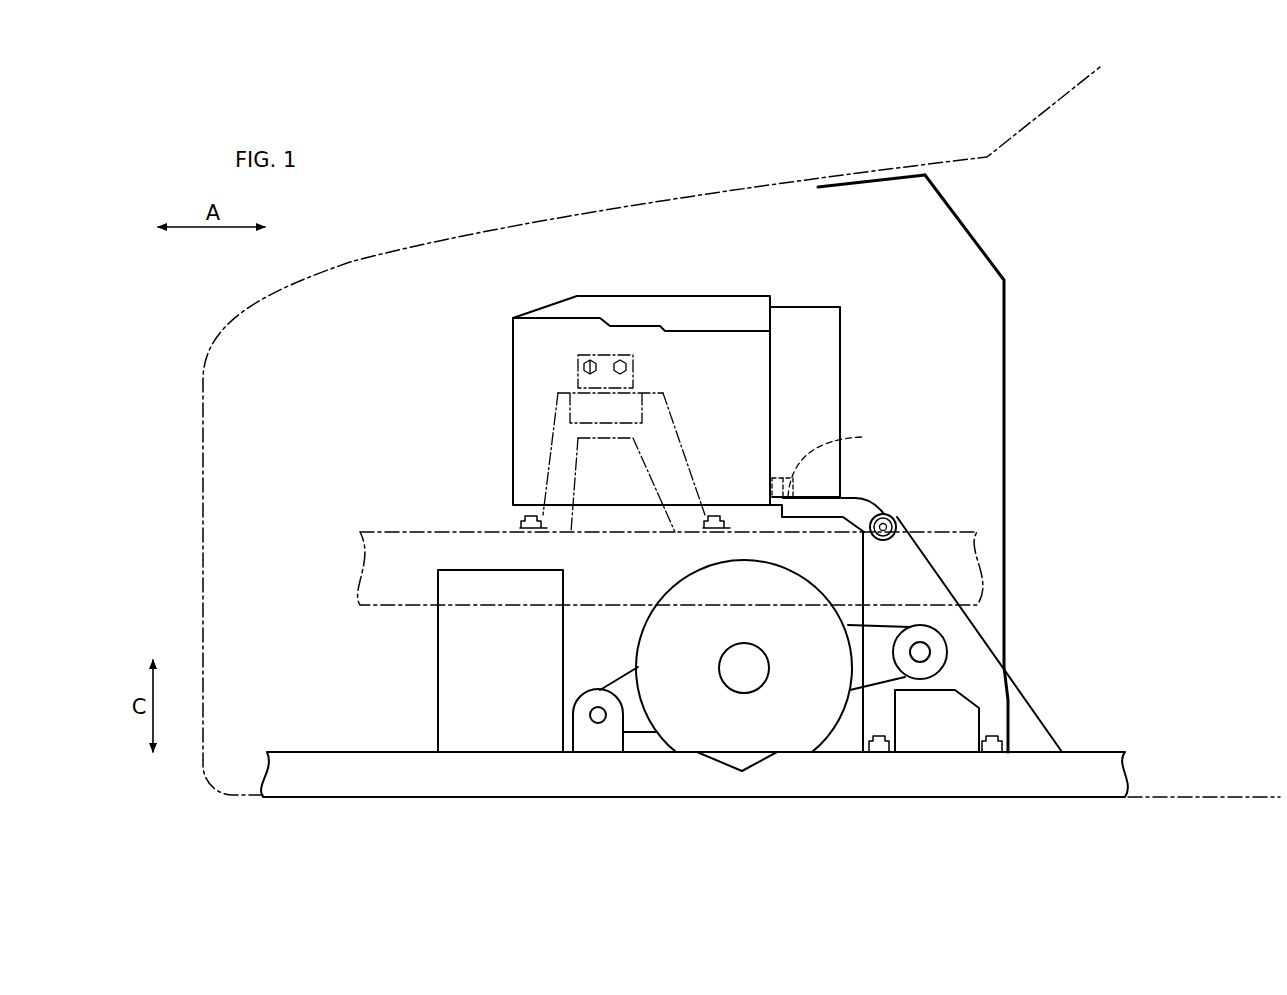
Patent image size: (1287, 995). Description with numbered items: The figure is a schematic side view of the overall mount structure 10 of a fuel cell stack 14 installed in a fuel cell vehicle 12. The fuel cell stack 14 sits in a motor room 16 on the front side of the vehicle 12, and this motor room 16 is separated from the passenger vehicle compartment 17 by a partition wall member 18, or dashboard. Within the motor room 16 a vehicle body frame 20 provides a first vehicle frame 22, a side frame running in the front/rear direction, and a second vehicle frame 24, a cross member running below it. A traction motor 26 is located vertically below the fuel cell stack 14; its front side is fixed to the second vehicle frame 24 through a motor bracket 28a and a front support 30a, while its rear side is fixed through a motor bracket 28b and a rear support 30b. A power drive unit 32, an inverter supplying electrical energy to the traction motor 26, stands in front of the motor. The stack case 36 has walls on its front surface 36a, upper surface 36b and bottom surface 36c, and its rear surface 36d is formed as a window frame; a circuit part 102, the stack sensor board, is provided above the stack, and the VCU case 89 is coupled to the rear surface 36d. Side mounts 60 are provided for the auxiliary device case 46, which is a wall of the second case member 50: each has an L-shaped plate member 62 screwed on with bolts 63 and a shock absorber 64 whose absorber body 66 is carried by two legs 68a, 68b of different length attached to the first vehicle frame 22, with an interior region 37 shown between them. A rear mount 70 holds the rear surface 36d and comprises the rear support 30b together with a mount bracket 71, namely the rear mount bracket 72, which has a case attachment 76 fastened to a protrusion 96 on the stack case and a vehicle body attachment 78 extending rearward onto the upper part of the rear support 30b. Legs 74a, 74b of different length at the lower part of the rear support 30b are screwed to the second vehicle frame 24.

The mount structure 10 is at (972, 461).
The fuel cell vehicle 12 is at (205, 314).
The fuel cell stack 14 is at (744, 492).
The motor room 16 is at (752, 214).
The vehicle compartment 17 is at (1050, 160).
The partition wall member 18 is at (1007, 316).
The vehicle body frame 20 is at (770, 638).
The first vehicle frame 22 is at (420, 532).
The second vehicle frame 24 is at (356, 752).
The traction motor 26 is at (783, 744).
The motor bracket 28a is at (625, 688).
The motor bracket 28b is at (874, 651).
The front support 30a is at (588, 726).
The rear support 30b is at (966, 651).
The power drive unit 32 is at (437, 652).
The stack case 36 is at (735, 345).
The front surface 36a is at (513, 342).
The upper surface 36b is at (645, 300).
The bottom surface 36c is at (613, 508).
The rear surface 36d is at (772, 378).
The housing interior 37 is at (540, 419).
The auxiliary device case 46 is at (863, 402).
The second case member 50 is at (784, 404).
The side mount 60 is at (602, 426).
The plate member 62 is at (634, 362).
The bolt 63 is at (588, 356).
The shock absorber 64 is at (672, 430).
The absorber body 66 is at (558, 398).
The leg 68a is at (562, 476).
The leg 68b is at (667, 472).
The rear mount 70 is at (912, 518).
The mount bracket 71 is at (815, 532).
The rear mount bracket 72 is at (797, 521).
The leg 74a is at (880, 711).
The leg 74b is at (993, 721).
The case attachment 76 is at (838, 461).
The vehicle body attachment 78 is at (850, 510).
The VCU case 89 is at (867, 288).
The protrusion 96 is at (779, 506).
The circuit part 102 is at (696, 293).